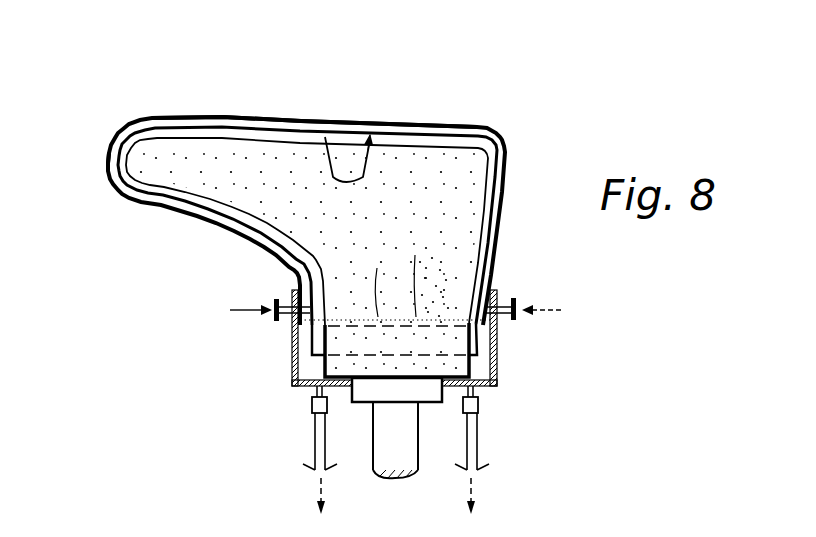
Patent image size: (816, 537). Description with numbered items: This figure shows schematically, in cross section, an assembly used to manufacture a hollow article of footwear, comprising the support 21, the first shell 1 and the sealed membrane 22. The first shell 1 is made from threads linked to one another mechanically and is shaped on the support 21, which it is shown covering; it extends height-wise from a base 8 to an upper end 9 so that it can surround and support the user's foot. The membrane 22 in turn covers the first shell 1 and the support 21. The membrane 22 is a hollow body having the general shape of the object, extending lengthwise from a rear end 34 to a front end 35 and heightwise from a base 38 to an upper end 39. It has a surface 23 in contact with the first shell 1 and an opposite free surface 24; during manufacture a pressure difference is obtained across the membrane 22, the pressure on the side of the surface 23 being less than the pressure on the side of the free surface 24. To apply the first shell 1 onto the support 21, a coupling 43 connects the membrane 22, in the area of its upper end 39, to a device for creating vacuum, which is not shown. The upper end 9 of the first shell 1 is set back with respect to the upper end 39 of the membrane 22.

The first shell 1 is at (470, 131).
The base 8 is at (157, 128).
The upper end 9 is at (482, 341).
The support 21 is at (423, 160).
The sealed membrane 22 is at (506, 157).
The surface 23 is at (328, 170).
The free surface 24 is at (378, 123).
The rear end 34 is at (506, 175).
The front end 35 is at (108, 172).
The base 38 is at (207, 116).
The upper end 39 is at (473, 357).
The coupling 43 is at (293, 367).